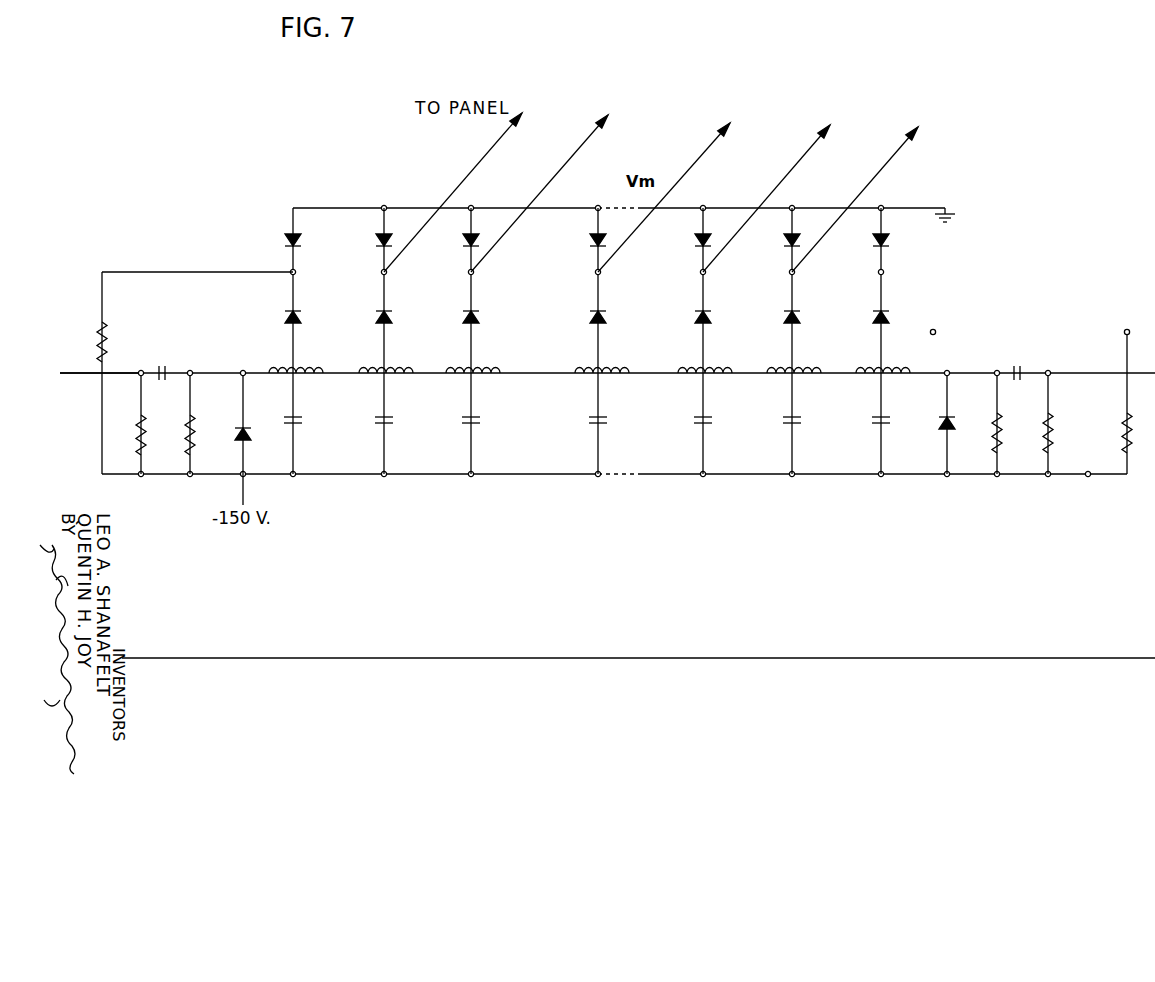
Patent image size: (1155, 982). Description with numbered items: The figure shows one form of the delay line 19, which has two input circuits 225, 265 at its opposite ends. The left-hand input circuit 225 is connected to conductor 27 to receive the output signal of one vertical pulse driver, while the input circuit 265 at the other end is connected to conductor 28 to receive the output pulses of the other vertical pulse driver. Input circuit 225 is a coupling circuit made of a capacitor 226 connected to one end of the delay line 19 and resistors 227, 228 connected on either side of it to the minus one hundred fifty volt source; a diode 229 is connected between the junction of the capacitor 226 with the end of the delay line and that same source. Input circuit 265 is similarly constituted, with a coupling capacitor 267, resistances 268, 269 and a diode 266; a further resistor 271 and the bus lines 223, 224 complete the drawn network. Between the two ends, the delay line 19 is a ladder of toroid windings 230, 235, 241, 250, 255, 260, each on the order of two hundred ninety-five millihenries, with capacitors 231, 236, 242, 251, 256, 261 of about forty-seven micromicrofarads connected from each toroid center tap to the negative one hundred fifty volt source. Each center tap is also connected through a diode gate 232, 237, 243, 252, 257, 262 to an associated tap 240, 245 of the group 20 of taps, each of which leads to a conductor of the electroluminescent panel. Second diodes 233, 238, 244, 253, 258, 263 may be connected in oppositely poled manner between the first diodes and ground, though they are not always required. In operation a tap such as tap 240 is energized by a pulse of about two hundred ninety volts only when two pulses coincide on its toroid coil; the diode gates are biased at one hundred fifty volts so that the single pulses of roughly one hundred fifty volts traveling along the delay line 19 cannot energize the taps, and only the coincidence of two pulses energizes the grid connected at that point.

The delay line 19 is at (607, 445).
The group of taps 20 is at (646, 197).
The conductor 27 is at (86, 354).
The conductor 28 is at (164, 658).
The common bus line 223 is at (370, 210).
The ground return line 224 is at (438, 476).
The input circuit 225 is at (185, 362).
The capacitor 226 is at (175, 387).
The resistor 227 is at (135, 440).
The resistor 228 is at (184, 440).
The diode 229 is at (107, 341).
The inductor 230 is at (285, 366).
The capacitor 231 is at (297, 416).
The diode 232 is at (300, 316).
The diode 233 is at (301, 239).
The toroid winding 235 is at (375, 366).
The capacitor 236 is at (387, 415).
The diode gate 237 is at (391, 316).
The second diode 238 is at (391, 243).
The tap 240 is at (496, 144).
The inductor 241 is at (465, 366).
The capacitor 242 is at (474, 415).
The diode 243 is at (478, 316).
The diode 244 is at (478, 243).
The tap lead to panel 245 is at (586, 144).
The inductor 250 is at (693, 367).
The capacitor 251 is at (705, 415).
The diode 252 is at (695, 320).
The diode 253 is at (696, 240).
The inductor 255 is at (788, 366).
The capacitor 256 is at (794, 415).
The diode 257 is at (800, 317).
The diode 258 is at (785, 240).
The inductor 260 is at (880, 367).
The capacitor 261 is at (884, 415).
The diode 262 is at (890, 313).
The diode 263 is at (889, 241).
The input circuit 265 is at (1033, 356).
The diode 266 is at (940, 438).
The coupling capacitor 267 is at (1025, 383).
The resistance 268 is at (994, 436).
The resistance 269 is at (1044, 436).
The resistor 271 is at (1111, 401).